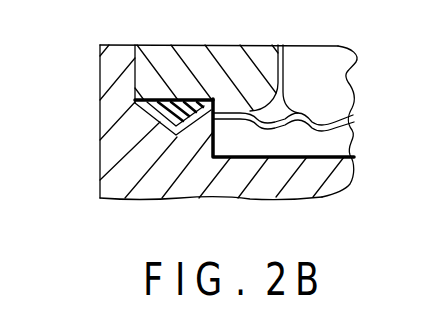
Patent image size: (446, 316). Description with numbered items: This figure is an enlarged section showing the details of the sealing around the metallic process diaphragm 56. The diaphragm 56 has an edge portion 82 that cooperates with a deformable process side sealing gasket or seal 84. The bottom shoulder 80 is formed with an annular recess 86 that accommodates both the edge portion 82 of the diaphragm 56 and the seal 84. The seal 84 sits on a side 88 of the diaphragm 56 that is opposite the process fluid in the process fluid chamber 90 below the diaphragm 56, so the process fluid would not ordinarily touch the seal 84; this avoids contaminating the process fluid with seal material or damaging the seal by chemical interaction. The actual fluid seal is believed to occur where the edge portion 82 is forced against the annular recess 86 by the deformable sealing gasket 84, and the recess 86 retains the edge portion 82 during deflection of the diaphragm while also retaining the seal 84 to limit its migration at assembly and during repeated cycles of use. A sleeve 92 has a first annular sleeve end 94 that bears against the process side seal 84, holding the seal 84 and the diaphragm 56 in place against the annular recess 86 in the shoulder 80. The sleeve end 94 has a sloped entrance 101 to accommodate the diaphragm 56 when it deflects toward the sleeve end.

The metallic process diaphragm 56 is at (262, 210).
The bottom shoulder 80 is at (211, 115).
The edge portion 82 is at (188, 125).
The process side sealing gasket 84 is at (166, 108).
The annular recess 86 is at (140, 122).
The side of the diaphragm 88 is at (262, 210).
The process fluid chamber 90 is at (303, 143).
The sleeve 92 is at (123, 62).
The first annular sleeve end 94 is at (130, 93).
The sloped entrance 101 is at (287, 159).